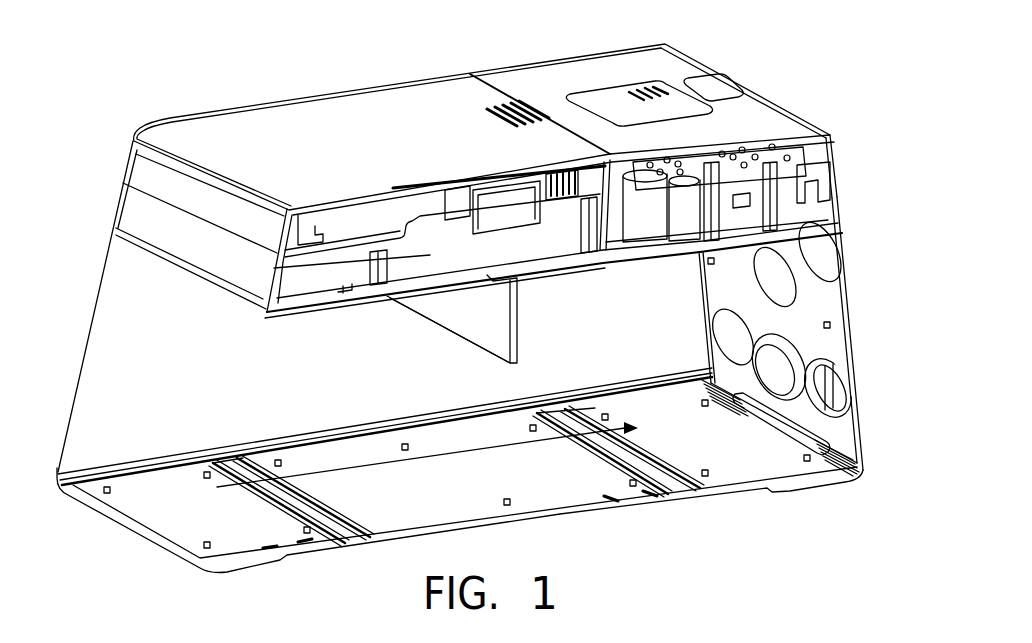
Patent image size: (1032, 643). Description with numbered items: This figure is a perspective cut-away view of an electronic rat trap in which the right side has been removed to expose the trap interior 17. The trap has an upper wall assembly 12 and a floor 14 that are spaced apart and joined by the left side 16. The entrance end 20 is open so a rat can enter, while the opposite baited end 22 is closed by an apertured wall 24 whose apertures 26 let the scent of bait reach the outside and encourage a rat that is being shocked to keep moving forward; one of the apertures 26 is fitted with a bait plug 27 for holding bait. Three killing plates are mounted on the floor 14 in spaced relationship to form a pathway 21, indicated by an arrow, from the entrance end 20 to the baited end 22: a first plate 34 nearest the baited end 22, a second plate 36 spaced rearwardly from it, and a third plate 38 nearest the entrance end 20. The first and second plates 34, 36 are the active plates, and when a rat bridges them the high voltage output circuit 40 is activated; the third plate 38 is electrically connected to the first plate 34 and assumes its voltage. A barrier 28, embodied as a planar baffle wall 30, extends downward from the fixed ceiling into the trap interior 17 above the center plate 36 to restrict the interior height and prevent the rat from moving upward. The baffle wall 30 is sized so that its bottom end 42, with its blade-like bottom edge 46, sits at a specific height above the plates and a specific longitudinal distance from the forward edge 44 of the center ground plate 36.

The upper wall assembly 12 is at (461, 76).
The floor 14 is at (340, 549).
The left side 16 is at (169, 346).
The trap interior 17 is at (92, 397).
The entrance end 20 is at (100, 268).
The pathway 21 is at (355, 465).
The baited end 22 is at (872, 318).
The apertured wall 24 is at (820, 296).
The apertures 26 is at (840, 394).
The bait plug 27 is at (790, 362).
The barrier 28 is at (530, 306).
The baffle wall 30 is at (447, 310).
The first plate 34 is at (724, 460).
The second plate 36 is at (428, 506).
The third plate 38 is at (229, 530).
The high voltage output circuit 40 is at (812, 156).
The bottom end 42 is at (524, 360).
The forward edge 44 is at (657, 490).
The blade-like bottom edge 46 is at (473, 344).